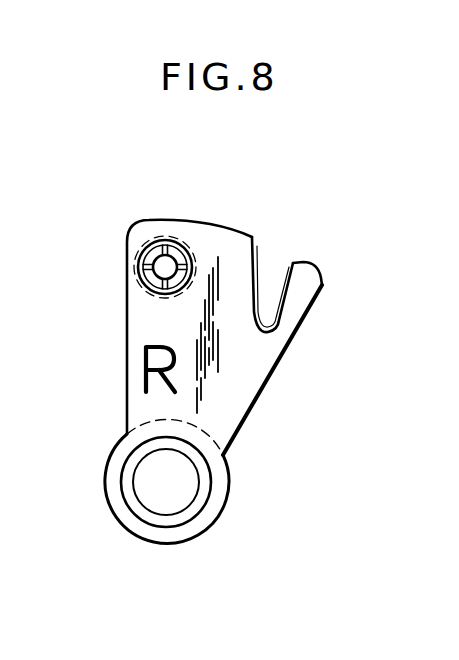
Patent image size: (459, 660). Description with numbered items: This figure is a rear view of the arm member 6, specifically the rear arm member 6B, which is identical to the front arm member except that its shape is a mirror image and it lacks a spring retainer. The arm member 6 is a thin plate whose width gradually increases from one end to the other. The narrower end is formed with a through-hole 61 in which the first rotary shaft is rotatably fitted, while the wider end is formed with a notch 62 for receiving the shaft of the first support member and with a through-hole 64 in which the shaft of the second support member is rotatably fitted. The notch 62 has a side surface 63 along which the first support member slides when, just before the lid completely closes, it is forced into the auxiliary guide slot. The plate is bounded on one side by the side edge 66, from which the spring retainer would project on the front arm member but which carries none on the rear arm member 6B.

The arm member 6 is at (121, 387).
The rear arm member 6B is at (193, 222).
The through-hole 61 is at (194, 503).
The notch 62 is at (276, 303).
The side surface 63 is at (270, 258).
The through-hole 64 is at (160, 271).
The side edge 66 is at (272, 344).